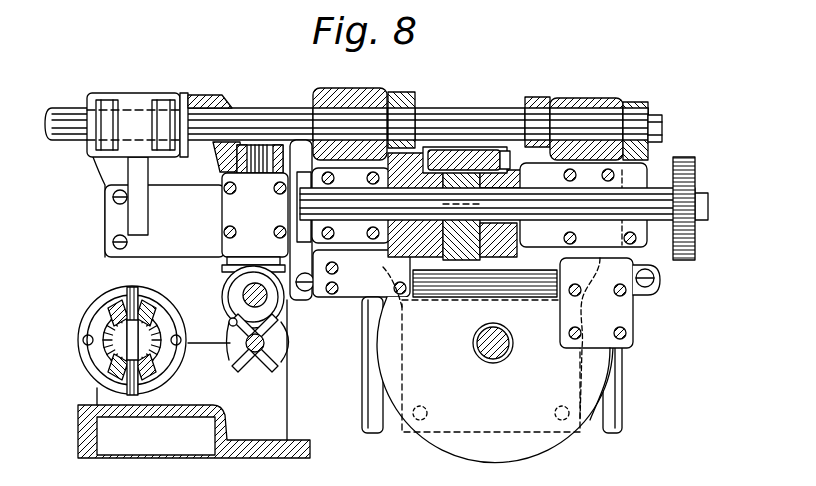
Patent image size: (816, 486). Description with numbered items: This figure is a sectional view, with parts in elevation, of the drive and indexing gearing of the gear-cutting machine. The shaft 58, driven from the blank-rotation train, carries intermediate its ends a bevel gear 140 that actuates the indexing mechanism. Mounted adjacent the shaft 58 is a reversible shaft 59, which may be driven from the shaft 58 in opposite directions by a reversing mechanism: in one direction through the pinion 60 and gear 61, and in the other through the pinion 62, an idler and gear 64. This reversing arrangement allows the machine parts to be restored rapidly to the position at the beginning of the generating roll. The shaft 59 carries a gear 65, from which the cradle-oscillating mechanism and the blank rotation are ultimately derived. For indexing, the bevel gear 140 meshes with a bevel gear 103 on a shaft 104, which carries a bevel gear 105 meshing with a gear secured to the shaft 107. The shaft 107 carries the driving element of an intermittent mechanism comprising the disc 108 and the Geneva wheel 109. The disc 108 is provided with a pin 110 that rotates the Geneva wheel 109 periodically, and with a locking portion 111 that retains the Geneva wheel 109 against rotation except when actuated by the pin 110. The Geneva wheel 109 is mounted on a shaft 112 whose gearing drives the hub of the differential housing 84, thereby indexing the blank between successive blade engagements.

The bevel gear 140 is at (230, 93).
The shaft 58 is at (267, 114).
The pinion 60 is at (414, 106).
The pinion 62 is at (548, 96).
The reversible shaft 59 is at (648, 193).
The gear 65 is at (696, 248).
The gear 61 is at (409, 240).
The gear 64 is at (522, 255).
The bevel gear 103 is at (228, 165).
The differential housing 84 is at (100, 302).
The shaft 104 is at (235, 262).
The bevel gear 105 is at (222, 270).
The shaft 107 is at (265, 293).
The disc 108 is at (243, 296).
The pin 110 is at (229, 322).
The locking portion 111 is at (280, 302).
The Geneva wheel 109 is at (283, 345).
The shaft 112 is at (257, 364).